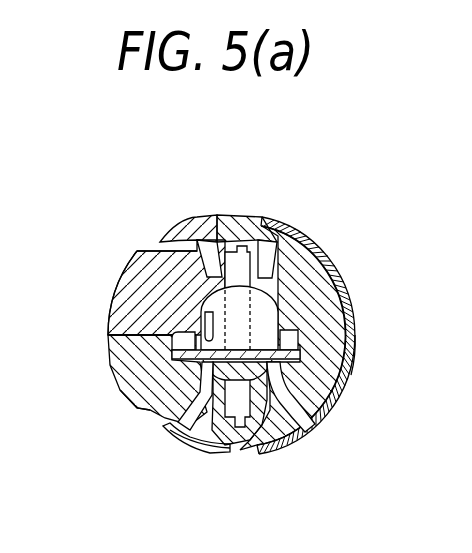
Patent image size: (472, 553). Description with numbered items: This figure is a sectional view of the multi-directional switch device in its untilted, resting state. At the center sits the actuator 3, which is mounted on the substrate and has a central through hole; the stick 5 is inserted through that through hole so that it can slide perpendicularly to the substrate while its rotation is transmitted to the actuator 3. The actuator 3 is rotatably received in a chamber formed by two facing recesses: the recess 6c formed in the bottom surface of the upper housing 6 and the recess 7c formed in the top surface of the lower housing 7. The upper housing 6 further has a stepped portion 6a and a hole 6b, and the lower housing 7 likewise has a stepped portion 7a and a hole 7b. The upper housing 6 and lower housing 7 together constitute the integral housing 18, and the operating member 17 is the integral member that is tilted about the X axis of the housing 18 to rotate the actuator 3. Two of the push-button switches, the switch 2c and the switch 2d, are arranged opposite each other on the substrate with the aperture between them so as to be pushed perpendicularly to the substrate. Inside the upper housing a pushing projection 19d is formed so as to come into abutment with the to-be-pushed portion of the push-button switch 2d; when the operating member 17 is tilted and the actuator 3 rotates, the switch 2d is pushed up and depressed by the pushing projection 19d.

The push-button switch 2c is at (135, 385).
The push-button switch 2d is at (356, 355).
The actuator 3 is at (163, 405).
The stick 5 is at (268, 216).
The upper housing 6 is at (130, 292).
The stepped portion 6a is at (142, 250).
The hole 6b is at (199, 235).
The recess 6c is at (160, 250).
The lower housing 7 is at (128, 358).
The stepped portion 7a is at (163, 420).
The hole 7b is at (210, 427).
The recess 7c is at (293, 405).
The operating member 17 is at (302, 232).
The integral housing 18 is at (74, 290).
The pushing projection 19d is at (343, 273).